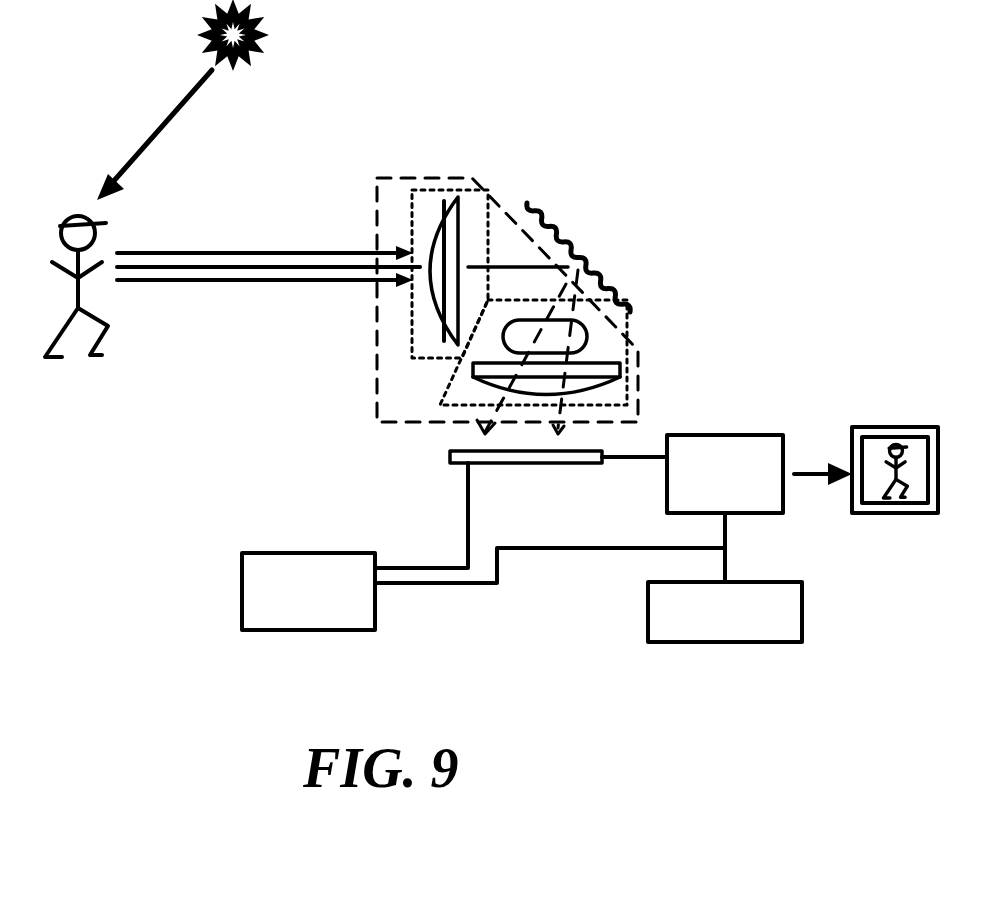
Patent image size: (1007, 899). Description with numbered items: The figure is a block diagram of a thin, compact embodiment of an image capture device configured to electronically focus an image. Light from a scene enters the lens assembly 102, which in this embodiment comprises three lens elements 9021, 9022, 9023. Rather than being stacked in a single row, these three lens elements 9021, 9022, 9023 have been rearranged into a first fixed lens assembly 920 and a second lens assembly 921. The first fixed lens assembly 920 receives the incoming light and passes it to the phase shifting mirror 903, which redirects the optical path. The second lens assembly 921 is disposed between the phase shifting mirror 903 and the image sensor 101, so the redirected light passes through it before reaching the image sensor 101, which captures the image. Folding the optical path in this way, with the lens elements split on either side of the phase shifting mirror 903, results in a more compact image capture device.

The image sensor 101 is at (520, 463).
The lens assembly 102 is at (415, 425).
The phase shifting mirror 903 is at (557, 233).
The first fixed lens assembly 920 is at (410, 308).
The second lens assembly 921 is at (452, 378).
The lens element 9021 is at (432, 238).
The lens element 9022 is at (590, 337).
The lens element 9023 is at (625, 386).